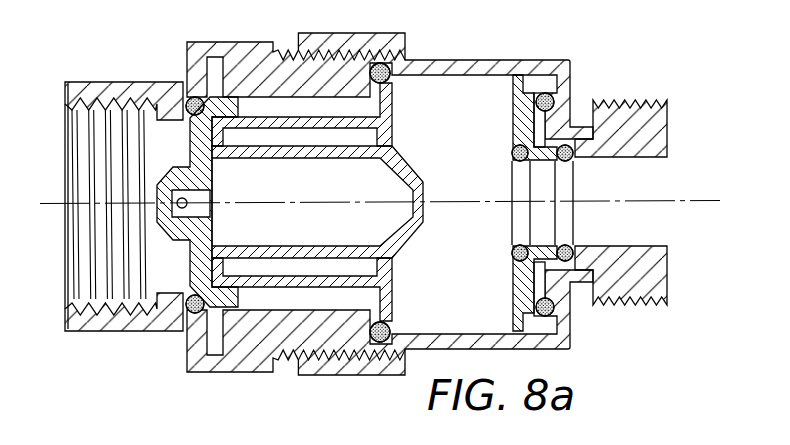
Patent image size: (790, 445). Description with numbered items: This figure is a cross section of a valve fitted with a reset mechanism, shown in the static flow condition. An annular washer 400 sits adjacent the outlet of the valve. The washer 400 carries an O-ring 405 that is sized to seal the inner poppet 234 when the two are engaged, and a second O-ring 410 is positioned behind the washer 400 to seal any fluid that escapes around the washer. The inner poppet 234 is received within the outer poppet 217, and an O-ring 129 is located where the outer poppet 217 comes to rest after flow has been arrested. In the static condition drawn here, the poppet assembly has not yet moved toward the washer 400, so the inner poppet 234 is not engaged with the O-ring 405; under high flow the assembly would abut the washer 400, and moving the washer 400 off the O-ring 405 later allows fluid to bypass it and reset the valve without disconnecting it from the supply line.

The O-ring 129 is at (190, 312).
The outer poppet 217 is at (250, 102).
The inner poppet 234 is at (401, 246).
The annular washer 400 is at (518, 310).
The O-ring 405 is at (514, 250).
The second O-ring 410 is at (550, 97).